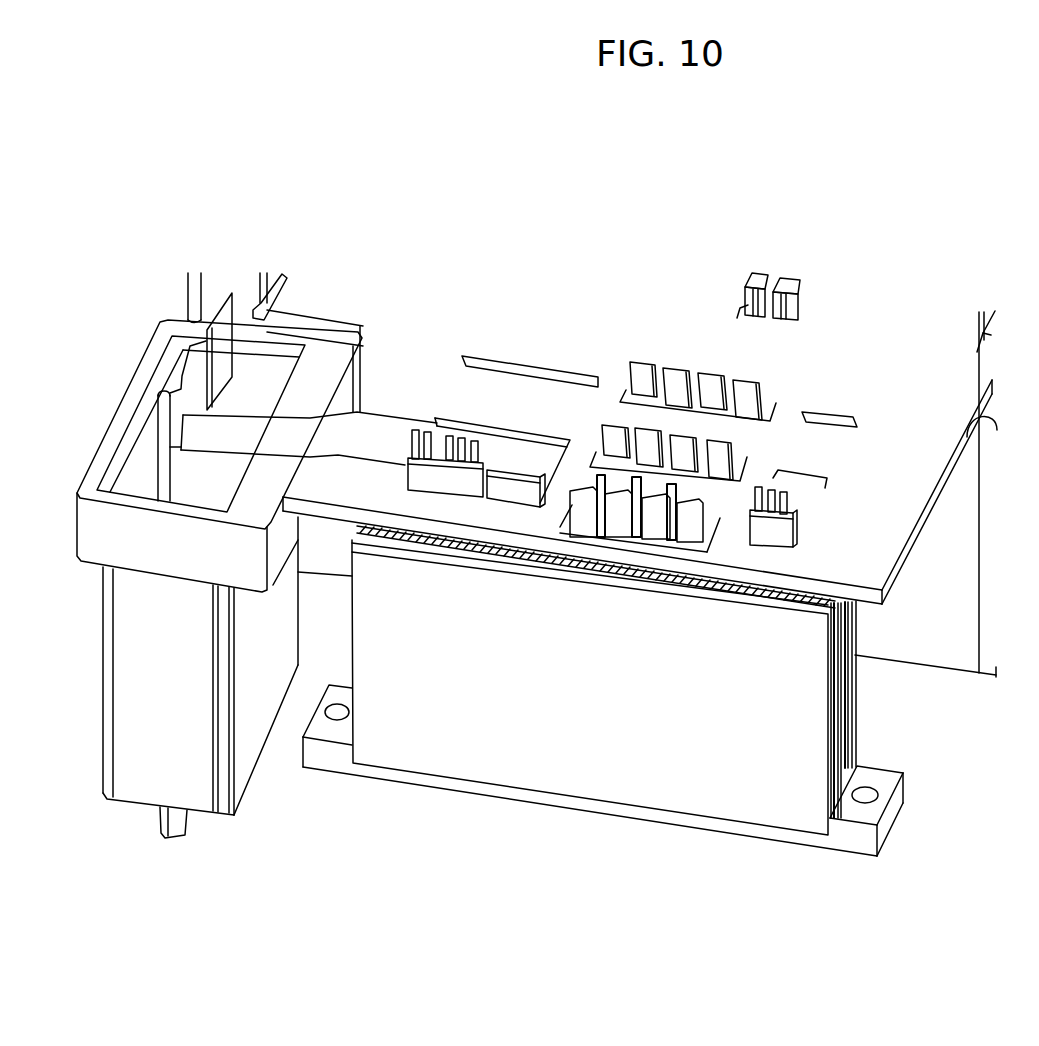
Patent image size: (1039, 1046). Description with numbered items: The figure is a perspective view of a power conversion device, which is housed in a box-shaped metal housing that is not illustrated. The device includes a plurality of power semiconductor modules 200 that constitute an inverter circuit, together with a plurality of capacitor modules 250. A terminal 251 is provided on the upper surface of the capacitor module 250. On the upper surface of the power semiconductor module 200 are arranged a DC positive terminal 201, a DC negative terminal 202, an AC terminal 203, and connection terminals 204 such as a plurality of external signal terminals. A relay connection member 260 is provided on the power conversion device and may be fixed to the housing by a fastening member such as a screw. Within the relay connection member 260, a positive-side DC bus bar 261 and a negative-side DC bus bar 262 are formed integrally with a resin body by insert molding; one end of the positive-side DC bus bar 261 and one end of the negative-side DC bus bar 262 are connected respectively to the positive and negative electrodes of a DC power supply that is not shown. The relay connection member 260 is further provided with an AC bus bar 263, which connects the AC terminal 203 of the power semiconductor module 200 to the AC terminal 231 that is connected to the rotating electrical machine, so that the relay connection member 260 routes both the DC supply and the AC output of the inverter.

The power semiconductor module 200 is at (540, 773).
The DC positive terminal 201 is at (587, 530).
The DC negative terminal 202 is at (620, 530).
The AC terminal 203 is at (520, 497).
The connection terminal 204 is at (443, 483).
The AC terminal 231 is at (236, 296).
The capacitor module 250 is at (940, 667).
The terminal 251 is at (790, 278).
The relay connection member 260 is at (888, 600).
The positive-side DC bus bar 261 is at (590, 467).
The negative-side DC bus bar 262 is at (630, 473).
The AC bus bar 263 is at (410, 430).